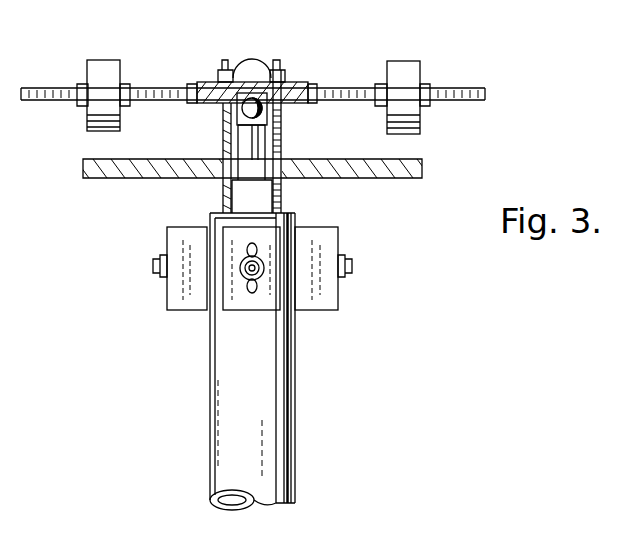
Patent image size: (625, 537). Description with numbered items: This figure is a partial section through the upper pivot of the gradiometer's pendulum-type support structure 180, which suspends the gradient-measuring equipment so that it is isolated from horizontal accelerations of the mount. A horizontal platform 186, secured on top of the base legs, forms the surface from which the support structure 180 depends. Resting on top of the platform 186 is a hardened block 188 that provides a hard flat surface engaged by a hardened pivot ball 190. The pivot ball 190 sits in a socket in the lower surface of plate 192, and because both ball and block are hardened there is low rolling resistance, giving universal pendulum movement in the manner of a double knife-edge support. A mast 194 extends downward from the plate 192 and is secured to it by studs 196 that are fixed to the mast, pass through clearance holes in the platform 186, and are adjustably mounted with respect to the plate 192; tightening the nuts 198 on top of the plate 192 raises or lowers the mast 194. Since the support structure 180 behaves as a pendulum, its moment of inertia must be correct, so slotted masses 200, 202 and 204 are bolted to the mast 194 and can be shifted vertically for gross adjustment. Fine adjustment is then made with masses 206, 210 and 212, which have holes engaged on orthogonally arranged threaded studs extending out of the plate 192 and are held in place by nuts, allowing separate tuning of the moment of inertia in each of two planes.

The support structure 180 is at (300, 427).
The platform 186 is at (98, 175).
The hardened block 188 is at (258, 144).
The pivot ball 190 is at (243, 108).
The plate 192 is at (197, 83).
The mast 194 is at (272, 465).
The studs 196 is at (282, 197).
The nuts 198 is at (227, 63).
The movably mounted mass 200 is at (168, 305).
The movably mounted mass 202 is at (240, 305).
The movably mounted mass 204 is at (330, 303).
The mass 206 is at (89, 60).
The mass 210 is at (418, 62).
The mass 212 is at (262, 62).